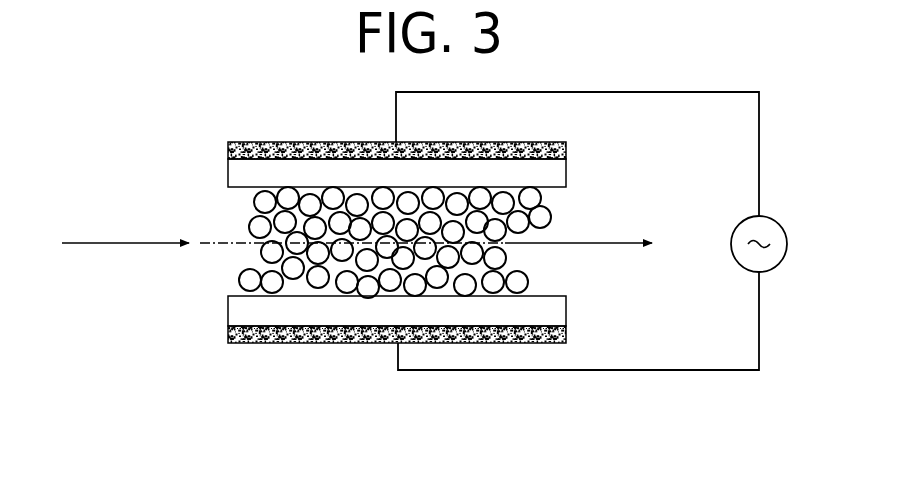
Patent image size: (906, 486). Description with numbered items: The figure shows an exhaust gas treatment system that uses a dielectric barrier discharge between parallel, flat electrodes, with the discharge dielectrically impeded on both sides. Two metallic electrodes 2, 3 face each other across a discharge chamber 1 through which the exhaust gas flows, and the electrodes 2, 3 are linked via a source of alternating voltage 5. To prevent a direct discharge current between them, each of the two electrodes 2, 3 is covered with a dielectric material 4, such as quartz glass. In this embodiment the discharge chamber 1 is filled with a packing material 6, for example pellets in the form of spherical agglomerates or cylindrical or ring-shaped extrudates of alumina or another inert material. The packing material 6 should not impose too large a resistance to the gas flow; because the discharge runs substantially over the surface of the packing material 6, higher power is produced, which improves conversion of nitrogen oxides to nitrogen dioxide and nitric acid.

The discharge chamber 1 is at (230, 209).
The electrode 2 is at (262, 143).
The electrode 3 is at (268, 345).
The dielectric material 4 is at (556, 172).
The source of alternating voltage 5 is at (754, 262).
The packing material 6 is at (256, 257).